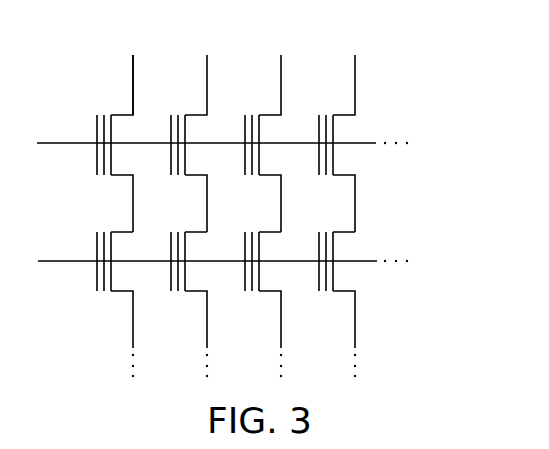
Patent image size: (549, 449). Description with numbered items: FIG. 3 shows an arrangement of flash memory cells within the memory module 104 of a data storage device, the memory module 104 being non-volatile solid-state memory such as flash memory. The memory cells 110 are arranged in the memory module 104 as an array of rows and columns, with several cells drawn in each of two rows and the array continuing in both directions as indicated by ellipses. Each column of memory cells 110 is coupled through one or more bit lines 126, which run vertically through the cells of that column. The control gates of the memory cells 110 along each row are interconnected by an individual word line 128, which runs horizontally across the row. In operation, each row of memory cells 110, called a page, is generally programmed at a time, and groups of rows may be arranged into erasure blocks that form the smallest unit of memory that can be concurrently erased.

The memory module 104 is at (221, 192).
The memory cell 110 is at (118, 114).
The bit line 126 is at (134, 78).
The word line 128 is at (83, 143).